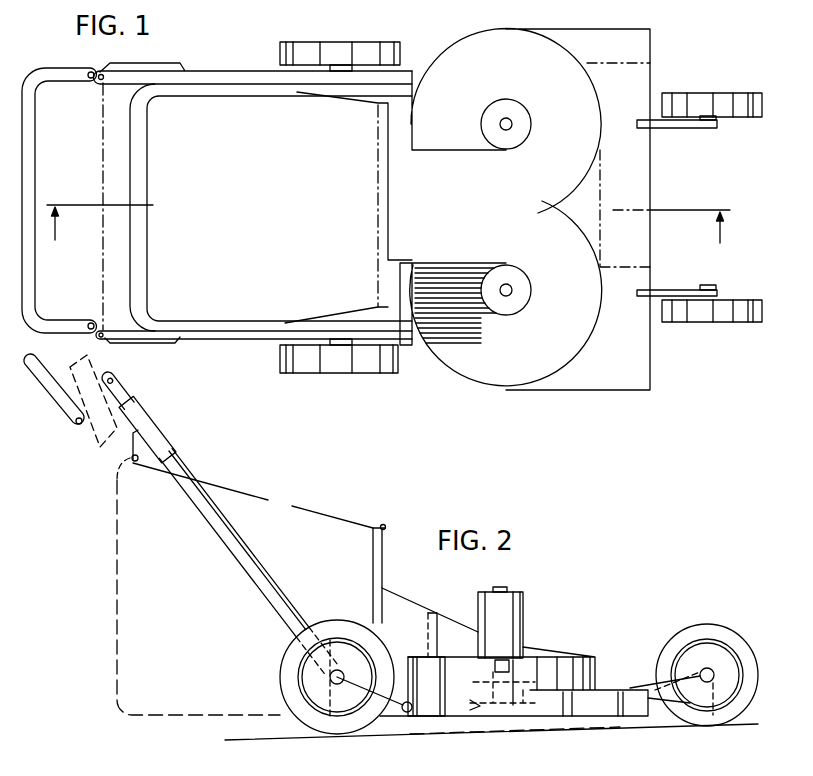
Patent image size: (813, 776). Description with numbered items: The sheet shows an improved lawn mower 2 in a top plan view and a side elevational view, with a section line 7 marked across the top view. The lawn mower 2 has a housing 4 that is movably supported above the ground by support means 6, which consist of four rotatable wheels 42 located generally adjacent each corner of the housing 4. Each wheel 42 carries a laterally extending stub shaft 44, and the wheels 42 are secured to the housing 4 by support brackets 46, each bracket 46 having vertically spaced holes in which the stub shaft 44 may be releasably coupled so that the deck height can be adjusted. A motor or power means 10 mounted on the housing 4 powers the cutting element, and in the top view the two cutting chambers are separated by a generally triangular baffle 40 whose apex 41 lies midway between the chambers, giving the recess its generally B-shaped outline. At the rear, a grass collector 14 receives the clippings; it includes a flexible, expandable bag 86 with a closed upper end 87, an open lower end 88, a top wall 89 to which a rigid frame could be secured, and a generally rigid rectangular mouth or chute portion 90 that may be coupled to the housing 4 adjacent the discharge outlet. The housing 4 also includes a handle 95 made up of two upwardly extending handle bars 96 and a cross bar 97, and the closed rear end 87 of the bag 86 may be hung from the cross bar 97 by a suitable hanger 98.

In FIG. 1, the lawn mower 2 is at (494, 26).
In FIG. 2, the lawn mower 2 is at (600, 648).
In FIG. 1, the housing 4 is at (551, 397).
In FIG. 2, the housing 4 is at (512, 740).
In FIG. 1, the support means 6 is at (381, 382).
In FIG. 1, the section line 7- 7 is at (388, 239).
In FIG. 1, the motor or power means 10 is at (507, 160).
In FIG. 2, the motor or power means 10 is at (537, 638).
In FIG. 1, the grass collector 14 is at (253, 190).
In FIG. 2, the grass collector 14 is at (182, 534).
In FIG. 1, the baffle 40 is at (577, 201).
In FIG. 1, the apex 41 is at (553, 206).
In FIG. 1, the wheels 42 is at (700, 94).
In FIG. 2, the wheels 42 is at (330, 734).
In FIG. 1, the stub shaft 44 is at (712, 124).
In FIG. 2, the stub shaft 44 is at (330, 678).
In FIG. 1, the support brackets 46 is at (681, 128).
In FIG. 2, the support brackets 46 is at (400, 712).
In FIG. 2, the bag 86 is at (338, 534).
In FIG. 1, the closed upper end 87 is at (103, 150).
In FIG. 2, the closed upper end 87 is at (117, 637).
In FIG. 2, the open lower end 88 is at (373, 573).
In FIG. 2, the top wall 89 is at (243, 496).
In FIG. 2, the chute portion 90 is at (385, 524).
In FIG. 1, the handle 95 is at (27, 66).
In FIG. 2, the handle 95 is at (70, 400).
In FIG. 1, the handle bars 96 is at (287, 76).
In FIG. 2, the handle bars 96 is at (243, 553).
In FIG. 1, the cross bar 97 is at (147, 200).
In FIG. 2, the hanger 98 is at (128, 455).